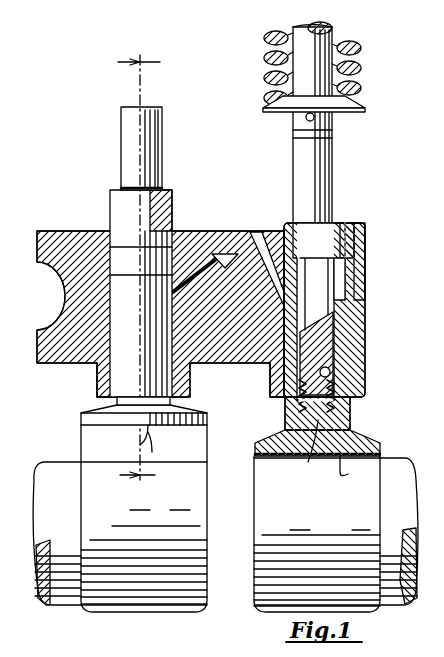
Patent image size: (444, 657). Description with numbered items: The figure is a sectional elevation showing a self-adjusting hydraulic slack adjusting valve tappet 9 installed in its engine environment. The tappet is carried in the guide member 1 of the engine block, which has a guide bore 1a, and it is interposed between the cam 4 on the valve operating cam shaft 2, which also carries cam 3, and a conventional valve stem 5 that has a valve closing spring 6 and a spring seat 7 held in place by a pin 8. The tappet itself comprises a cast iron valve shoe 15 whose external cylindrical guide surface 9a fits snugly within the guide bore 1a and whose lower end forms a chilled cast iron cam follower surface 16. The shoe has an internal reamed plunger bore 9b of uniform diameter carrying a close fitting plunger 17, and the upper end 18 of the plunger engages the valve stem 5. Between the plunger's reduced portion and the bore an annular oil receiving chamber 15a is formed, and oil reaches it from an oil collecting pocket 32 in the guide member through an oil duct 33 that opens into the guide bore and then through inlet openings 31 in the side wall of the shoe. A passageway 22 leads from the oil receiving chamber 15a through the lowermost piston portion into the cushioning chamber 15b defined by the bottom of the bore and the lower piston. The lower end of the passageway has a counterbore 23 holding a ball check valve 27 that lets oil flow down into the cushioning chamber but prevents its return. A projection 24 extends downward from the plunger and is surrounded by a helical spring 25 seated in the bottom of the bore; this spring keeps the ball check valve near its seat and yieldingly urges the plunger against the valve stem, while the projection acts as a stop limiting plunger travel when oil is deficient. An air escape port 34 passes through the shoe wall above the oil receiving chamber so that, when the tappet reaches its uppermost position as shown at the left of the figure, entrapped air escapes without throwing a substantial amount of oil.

The guide member 1 is at (365, 326).
The guide bore 1a is at (352, 283).
The valve operating cam shaft 2 is at (144, 273).
The cam 3 is at (96, 445).
The cam 4 is at (303, 530).
The valve stem 5 is at (332, 30).
The valve closing spring 6 is at (264, 60).
The spring seat 7 is at (352, 108).
The pin 8 is at (315, 118).
The slack adjusting valve tappet 9 is at (110, 205).
The external cylindrical guide surface 9a is at (117, 370).
The plunger bore 9b is at (340, 264).
The valve shoe 15 is at (85, 418).
The oil receiving chamber 15a is at (330, 312).
The cushioning chamber 15b is at (286, 415).
The cam follower surface 16 is at (248, 459).
The plunger 17 is at (334, 345).
The upper end of the plunger 18 is at (130, 107).
The passageway 22 is at (272, 372).
The counterbore 23 is at (335, 390).
The projection 24 is at (309, 451).
The helical spring 25 is at (352, 410).
The ball check valve 27 is at (331, 372).
The inlet openings 31 is at (284, 306).
The oil collecting pocket 32 is at (256, 233).
The oil duct 33 is at (205, 264).
The air escape port 34 is at (166, 232).